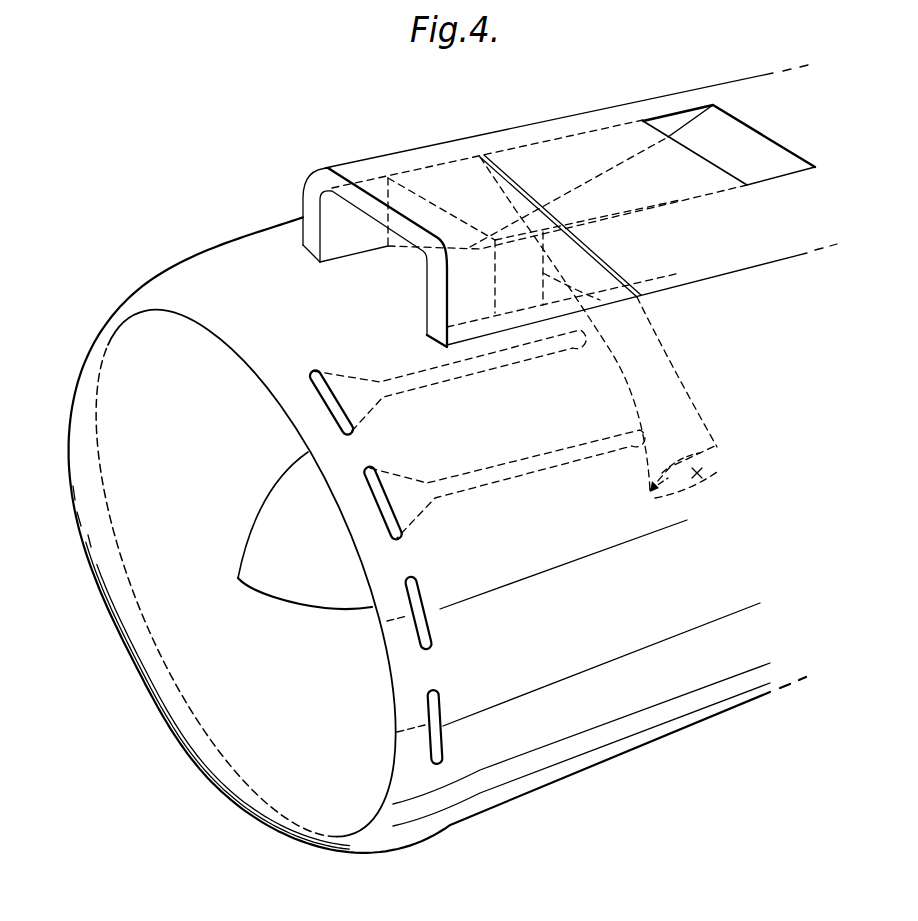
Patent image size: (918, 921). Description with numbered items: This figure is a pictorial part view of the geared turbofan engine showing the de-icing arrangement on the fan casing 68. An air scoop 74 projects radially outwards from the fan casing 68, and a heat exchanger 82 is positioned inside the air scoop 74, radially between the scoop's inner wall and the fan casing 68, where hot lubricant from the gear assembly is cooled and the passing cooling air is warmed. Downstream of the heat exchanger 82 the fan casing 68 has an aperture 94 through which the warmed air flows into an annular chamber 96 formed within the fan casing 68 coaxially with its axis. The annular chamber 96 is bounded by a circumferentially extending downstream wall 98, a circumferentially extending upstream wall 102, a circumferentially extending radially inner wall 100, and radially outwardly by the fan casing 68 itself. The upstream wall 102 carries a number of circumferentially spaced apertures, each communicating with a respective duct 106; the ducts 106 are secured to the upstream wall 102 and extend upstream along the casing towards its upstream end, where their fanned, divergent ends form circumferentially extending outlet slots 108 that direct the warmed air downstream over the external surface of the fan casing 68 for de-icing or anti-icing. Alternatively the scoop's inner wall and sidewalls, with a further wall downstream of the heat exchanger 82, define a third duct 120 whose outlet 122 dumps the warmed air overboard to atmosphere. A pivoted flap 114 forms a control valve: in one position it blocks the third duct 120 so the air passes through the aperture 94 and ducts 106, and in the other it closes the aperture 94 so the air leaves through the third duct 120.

The fan casing 68 is at (568, 758).
The air scoop 74 is at (348, 163).
The heat exchanger 82 is at (430, 177).
The aperture 94 is at (650, 302).
The annular chamber 96 is at (703, 480).
The downstream wall 98 is at (712, 457).
The radially inner wall 100 is at (667, 491).
The upstream wall 102 is at (598, 386).
The ducts 106 is at (505, 476).
The outlet slots 108 is at (433, 700).
The flap 114 is at (509, 177).
The third duct 120 is at (597, 150).
The outlet 122 is at (722, 120).